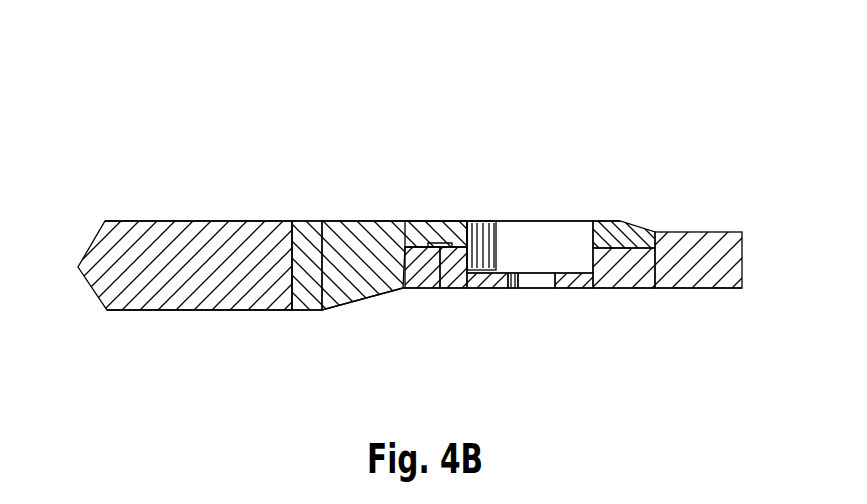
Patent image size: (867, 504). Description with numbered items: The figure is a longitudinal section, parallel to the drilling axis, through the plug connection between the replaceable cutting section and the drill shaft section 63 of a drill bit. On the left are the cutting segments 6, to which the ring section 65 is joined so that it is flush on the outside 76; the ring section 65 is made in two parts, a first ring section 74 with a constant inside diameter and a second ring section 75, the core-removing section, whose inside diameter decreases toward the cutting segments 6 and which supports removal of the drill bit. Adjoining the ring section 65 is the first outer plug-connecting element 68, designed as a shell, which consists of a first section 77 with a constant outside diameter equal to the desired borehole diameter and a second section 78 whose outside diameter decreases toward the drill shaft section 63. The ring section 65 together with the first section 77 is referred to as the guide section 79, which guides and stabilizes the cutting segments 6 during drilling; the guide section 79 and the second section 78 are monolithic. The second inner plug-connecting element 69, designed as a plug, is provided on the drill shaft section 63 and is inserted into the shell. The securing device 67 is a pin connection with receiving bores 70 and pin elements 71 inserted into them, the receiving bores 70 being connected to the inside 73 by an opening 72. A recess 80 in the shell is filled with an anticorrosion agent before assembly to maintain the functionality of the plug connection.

The cutting segments 6 is at (160, 228).
The drill shaft section 63 is at (704, 265).
The ring section 65 is at (351, 210).
The securing device 67 is at (548, 207).
The first outer plug-connecting element 68 is at (452, 210).
The second inner plug-connecting element 69 is at (634, 265).
The receiving bores 70 is at (584, 289).
The pin elements 71 is at (507, 247).
The opening 72 is at (535, 282).
The inside 73 is at (472, 288).
The first ring section 74 is at (310, 283).
The second ring section 75 is at (370, 277).
The outside 76 is at (266, 222).
The first section 77 is at (416, 240).
The second section 78 is at (638, 228).
The guide section 79 is at (602, 102).
The recess 80 is at (441, 258).